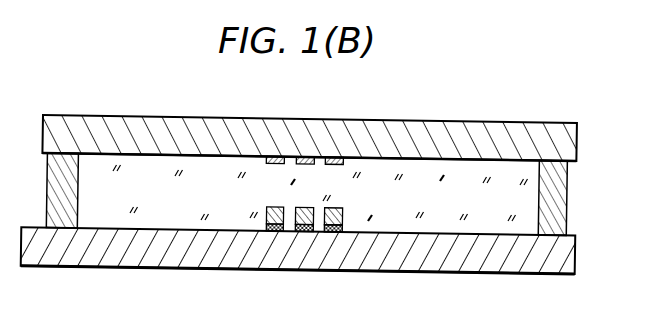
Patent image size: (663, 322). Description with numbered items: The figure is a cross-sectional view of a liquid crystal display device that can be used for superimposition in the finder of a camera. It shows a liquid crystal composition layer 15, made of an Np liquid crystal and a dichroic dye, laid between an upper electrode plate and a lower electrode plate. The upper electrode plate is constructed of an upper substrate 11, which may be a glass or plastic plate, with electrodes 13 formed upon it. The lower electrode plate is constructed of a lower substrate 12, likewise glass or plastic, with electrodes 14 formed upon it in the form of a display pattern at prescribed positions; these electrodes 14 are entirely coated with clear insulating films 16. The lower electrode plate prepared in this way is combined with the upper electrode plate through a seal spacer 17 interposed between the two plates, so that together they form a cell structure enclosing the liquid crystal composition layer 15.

The upper substrate 11 is at (568, 142).
The lower substrate 12 is at (565, 257).
The electrodes 13 is at (281, 158).
The electrodes 14 is at (278, 230).
The liquid crystal composition layer 15 is at (531, 183).
The clear insulating films 16 is at (268, 214).
The seal spacer 17 is at (57, 197).